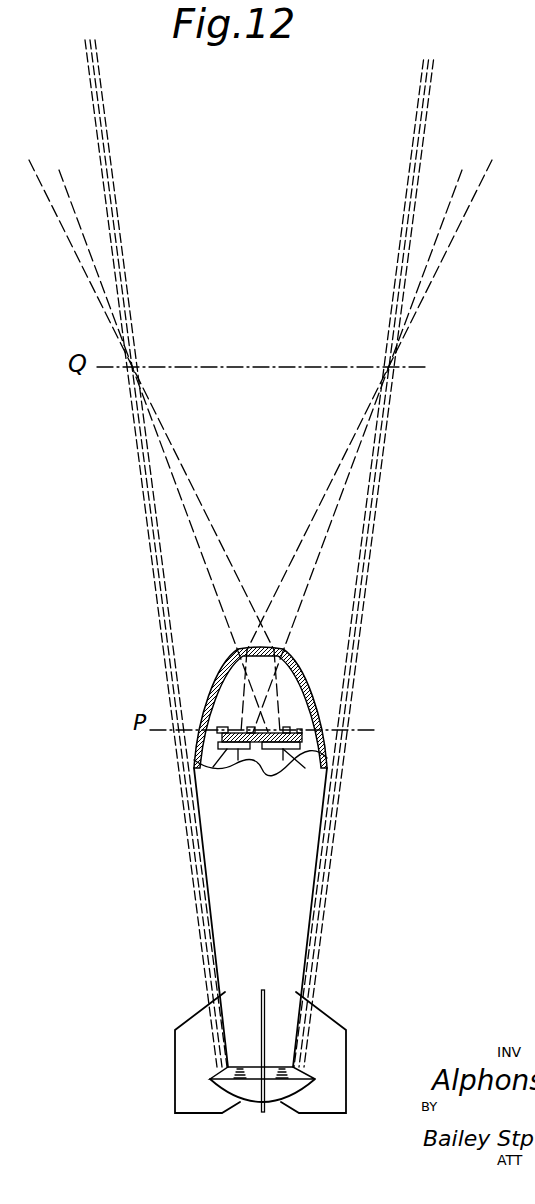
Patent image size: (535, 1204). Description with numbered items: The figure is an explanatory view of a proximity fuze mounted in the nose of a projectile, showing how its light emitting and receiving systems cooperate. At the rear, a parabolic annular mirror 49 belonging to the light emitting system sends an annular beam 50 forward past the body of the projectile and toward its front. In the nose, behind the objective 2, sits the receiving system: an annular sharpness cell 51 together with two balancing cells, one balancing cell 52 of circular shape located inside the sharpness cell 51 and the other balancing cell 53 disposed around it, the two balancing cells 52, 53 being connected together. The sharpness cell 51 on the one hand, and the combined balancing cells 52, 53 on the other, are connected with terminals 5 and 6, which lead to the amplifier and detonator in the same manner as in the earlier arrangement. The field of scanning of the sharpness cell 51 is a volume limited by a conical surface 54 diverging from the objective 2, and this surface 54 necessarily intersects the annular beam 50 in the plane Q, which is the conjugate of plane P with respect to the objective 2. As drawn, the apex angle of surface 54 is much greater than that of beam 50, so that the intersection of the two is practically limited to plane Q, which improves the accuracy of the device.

The objective 2 is at (273, 652).
The terminal 5 is at (213, 766).
The terminal 6 is at (300, 767).
The parabolic annular mirror 49 is at (277, 1088).
The annular beam 50 is at (364, 584).
The sharpness cell 51 is at (236, 730).
The balancing cell 52 is at (266, 731).
The balancing cell 53 is at (303, 731).
The surface 54 is at (313, 556).